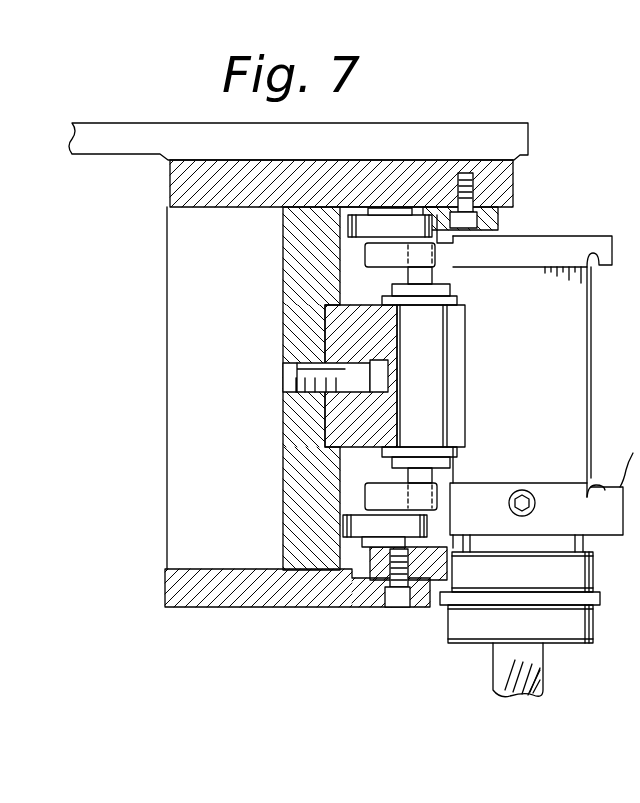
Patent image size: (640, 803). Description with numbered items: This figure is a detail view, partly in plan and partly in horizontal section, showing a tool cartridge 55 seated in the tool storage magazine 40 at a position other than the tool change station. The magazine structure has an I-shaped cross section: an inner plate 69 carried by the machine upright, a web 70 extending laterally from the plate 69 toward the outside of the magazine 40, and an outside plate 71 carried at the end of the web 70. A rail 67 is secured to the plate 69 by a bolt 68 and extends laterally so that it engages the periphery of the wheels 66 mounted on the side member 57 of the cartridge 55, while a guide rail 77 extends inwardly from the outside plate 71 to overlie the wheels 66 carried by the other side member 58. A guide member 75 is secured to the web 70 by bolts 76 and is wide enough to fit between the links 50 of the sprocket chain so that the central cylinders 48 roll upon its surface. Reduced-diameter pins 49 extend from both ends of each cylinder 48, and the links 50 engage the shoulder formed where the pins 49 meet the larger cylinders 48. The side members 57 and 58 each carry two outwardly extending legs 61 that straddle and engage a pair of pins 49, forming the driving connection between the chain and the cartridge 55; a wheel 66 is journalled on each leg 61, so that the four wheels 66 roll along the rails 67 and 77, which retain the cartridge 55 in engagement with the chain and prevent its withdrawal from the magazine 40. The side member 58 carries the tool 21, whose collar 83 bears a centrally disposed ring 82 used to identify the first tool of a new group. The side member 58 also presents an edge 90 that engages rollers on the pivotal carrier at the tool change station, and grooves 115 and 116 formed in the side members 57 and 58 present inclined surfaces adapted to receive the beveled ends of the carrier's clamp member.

The tool 21 is at (486, 670).
The tool storage magazine 40 is at (276, 612).
The central cylinder 48 is at (430, 365).
The pin 49 is at (432, 272).
The link 50 is at (457, 300).
The tool cartridge 55 is at (603, 545).
The side member 57 is at (570, 245).
The side member 58 is at (550, 490).
The leg 61 is at (380, 258).
The wheel 66 is at (348, 226).
The rail 67 is at (498, 222).
The bolt 68 is at (480, 187).
The plate 69 is at (200, 185).
The web 70 is at (300, 248).
The outside plate 71 is at (178, 590).
The guide member 75 is at (338, 334).
The bolt 76 is at (292, 378).
The guide rail 77 is at (440, 562).
The ring 82 is at (440, 600).
The collar 83 is at (475, 635).
The edge 90 is at (618, 456).
The groove 115 is at (596, 262).
The groove 116 is at (593, 485).